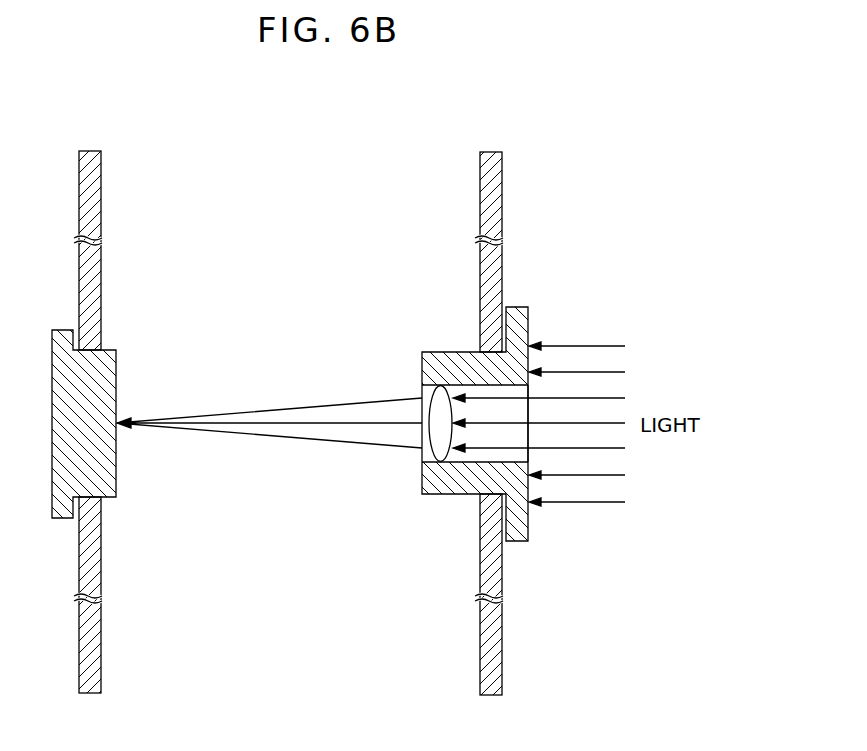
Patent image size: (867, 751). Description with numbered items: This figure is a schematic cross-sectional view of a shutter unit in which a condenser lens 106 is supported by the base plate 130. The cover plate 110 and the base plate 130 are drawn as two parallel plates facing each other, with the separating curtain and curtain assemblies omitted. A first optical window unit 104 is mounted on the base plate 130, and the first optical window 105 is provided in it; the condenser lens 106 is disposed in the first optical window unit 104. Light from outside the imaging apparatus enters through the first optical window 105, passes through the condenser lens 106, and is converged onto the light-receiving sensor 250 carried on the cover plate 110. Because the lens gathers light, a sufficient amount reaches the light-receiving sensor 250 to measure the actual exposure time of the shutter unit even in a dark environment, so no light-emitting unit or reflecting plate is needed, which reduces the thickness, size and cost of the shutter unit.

The cover plate 110 is at (88, 150).
The base plate 130 is at (488, 150).
The light-receiving sensor 250 is at (108, 490).
The first optical window unit 104 is at (527, 318).
The first optical window 105 is at (512, 437).
The condenser lens 106 is at (430, 436).